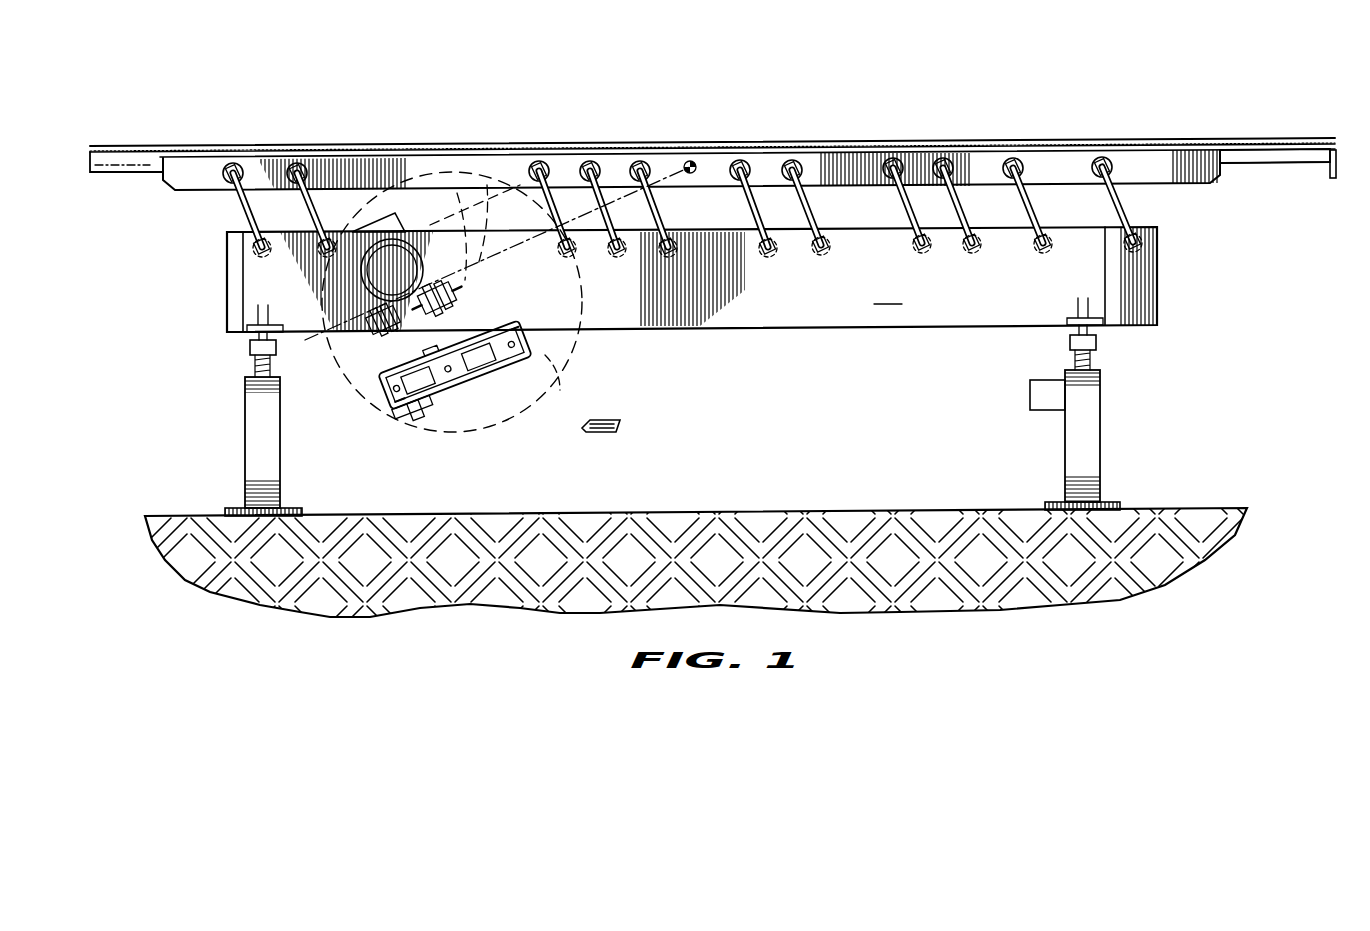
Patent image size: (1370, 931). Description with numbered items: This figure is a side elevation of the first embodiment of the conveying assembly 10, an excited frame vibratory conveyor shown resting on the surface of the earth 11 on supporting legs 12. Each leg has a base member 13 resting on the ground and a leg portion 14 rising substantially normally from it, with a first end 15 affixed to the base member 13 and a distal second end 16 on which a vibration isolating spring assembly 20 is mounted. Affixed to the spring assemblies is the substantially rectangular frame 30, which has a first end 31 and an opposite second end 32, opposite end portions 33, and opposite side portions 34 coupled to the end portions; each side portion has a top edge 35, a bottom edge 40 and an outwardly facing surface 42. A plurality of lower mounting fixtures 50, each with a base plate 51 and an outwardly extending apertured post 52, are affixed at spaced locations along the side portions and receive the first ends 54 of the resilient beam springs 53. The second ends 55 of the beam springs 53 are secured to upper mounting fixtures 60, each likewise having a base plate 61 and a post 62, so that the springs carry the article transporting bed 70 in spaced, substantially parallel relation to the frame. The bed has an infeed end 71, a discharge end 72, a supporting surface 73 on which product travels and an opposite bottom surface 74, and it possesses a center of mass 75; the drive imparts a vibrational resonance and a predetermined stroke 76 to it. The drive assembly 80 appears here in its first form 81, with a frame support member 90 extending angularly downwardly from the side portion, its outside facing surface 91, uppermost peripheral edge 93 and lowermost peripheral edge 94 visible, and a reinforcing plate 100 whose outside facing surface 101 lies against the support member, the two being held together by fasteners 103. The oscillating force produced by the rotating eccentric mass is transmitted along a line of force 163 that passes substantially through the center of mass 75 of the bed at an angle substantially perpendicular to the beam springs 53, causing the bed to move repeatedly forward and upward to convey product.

The conveying assembly 10 is at (1260, 285).
The surface of the earth 11 is at (765, 515).
The supporting legs 12 is at (695, 407).
The base member 13 is at (302, 510).
The leg portion 14 is at (268, 442).
The first end 15 is at (247, 500).
The second end 16 is at (255, 382).
The vibration isolating spring assembly 20 is at (288, 370).
The frame 30 is at (670, 316).
The first end 31 is at (230, 270).
The second end 32 is at (1160, 275).
The end portions 33 is at (205, 312).
The side portions 34 is at (925, 312).
The top edge 35 is at (825, 228).
The bottom edge 40 is at (965, 325).
The outwardly facing surface 42 is at (888, 292).
The lower mounting fixtures 50 is at (646, 193).
The base plate 51 is at (780, 225).
The post 52 is at (613, 180).
The beam springs 53 is at (540, 180).
The first ends 54 is at (1140, 170).
The second ends 55 is at (1015, 160).
The upper mounting fixtures 60 is at (243, 165).
The base plate 61 is at (230, 180).
The post 62 is at (238, 168).
The article transporting bed 70 is at (711, 129).
The infeed end 71 is at (125, 160).
The discharge end 72 is at (1340, 132).
The supporting surface 73 is at (1335, 178).
The bottom surface 74 is at (1250, 168).
The center of mass 75 is at (694, 160).
The stroke 76 is at (1265, 88).
The drive assembly 80 is at (518, 273).
The first form 81 is at (493, 185).
The frame support members 90 is at (555, 345).
The outside facing surface 91 is at (545, 360).
The uppermost peripheral edge 93 is at (395, 345).
The lowermost peripheral edge 94 is at (512, 382).
The reinforcing plates 100 is at (408, 410).
The outside facing surface 101 is at (428, 415).
The fasteners 103 is at (548, 372).
The line of force 163 is at (417, 135).